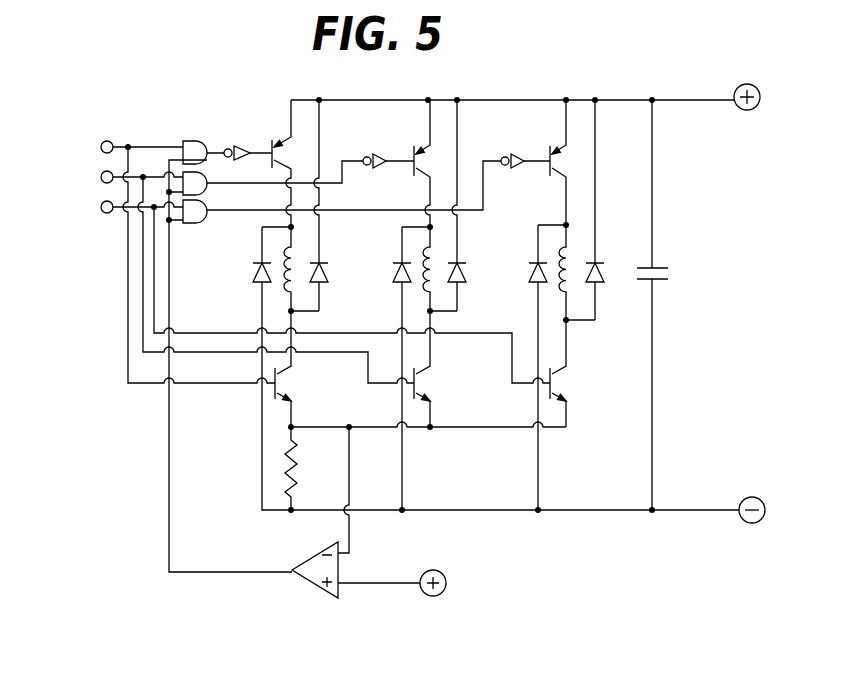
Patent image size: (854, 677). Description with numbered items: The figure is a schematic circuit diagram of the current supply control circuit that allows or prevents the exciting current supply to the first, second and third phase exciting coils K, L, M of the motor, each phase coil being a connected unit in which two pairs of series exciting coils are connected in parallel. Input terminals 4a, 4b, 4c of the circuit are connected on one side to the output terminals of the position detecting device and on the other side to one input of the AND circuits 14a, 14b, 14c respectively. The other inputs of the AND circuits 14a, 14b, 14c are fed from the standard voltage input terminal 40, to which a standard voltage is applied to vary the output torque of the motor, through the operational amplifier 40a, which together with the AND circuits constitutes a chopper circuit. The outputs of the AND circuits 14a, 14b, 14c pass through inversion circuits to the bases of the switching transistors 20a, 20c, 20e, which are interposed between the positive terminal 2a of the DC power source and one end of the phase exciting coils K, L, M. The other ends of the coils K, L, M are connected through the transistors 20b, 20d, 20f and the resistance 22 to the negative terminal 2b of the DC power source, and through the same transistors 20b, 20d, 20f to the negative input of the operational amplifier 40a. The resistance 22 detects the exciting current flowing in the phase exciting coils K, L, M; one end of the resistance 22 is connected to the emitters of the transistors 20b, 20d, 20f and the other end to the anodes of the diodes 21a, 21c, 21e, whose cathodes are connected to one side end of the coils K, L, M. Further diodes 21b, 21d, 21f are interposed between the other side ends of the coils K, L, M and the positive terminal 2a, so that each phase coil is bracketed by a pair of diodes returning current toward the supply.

The positive terminal 2a is at (744, 111).
The negative terminal 2b is at (749, 524).
The input terminal 4a is at (101, 146).
The input terminal 4b is at (101, 177).
The input terminal 4c is at (102, 211).
The AND circuit 14a is at (193, 141).
The AND circuit 14b is at (211, 171).
The AND circuit 14c is at (197, 224).
The transistor 20a is at (289, 140).
The transistor 20b is at (288, 384).
The transistor 20c is at (433, 143).
The transistor 20d is at (430, 384).
The transistor 20e is at (566, 146).
The transistor 20f is at (565, 384).
The diode 21a is at (251, 273).
The diode 21b is at (330, 266).
The diode 21c is at (391, 273).
The diode 21d is at (466, 273).
The diode 21e is at (531, 272).
The diode 21f is at (603, 272).
The resistance 22 is at (298, 470).
The standard voltage input terminal 40 is at (440, 596).
The operational amplifier 40a is at (307, 585).
The first phase exciting coil K is at (298, 241).
The second phase exciting coil L is at (437, 241).
The third phase exciting coil M is at (578, 242).